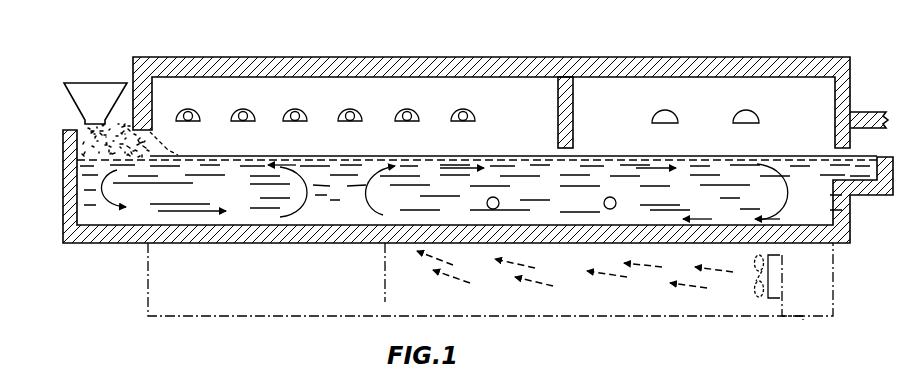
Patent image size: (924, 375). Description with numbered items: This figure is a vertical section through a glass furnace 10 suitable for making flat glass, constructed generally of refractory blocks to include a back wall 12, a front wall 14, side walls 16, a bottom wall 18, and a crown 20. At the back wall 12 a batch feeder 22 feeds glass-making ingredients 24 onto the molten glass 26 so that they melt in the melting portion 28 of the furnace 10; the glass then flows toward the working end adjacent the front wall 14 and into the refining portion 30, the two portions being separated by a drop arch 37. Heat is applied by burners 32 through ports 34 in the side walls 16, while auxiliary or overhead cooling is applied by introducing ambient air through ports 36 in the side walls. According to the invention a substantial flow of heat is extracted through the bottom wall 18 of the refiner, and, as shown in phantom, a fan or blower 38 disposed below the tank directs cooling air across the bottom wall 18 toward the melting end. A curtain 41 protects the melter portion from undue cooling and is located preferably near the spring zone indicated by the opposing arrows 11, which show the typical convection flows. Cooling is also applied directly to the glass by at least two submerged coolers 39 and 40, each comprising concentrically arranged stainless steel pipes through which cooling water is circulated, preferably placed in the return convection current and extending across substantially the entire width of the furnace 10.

The glass furnace 10 is at (205, 51).
The opposing arrows 11 is at (339, 186).
The back wall 12 is at (63, 168).
The front wall 14 is at (850, 223).
The side walls 16 is at (716, 147).
The bottom wall 18 is at (278, 244).
The crown 20 is at (330, 57).
The batch feeder 22 is at (110, 86).
The glass-making ingredients 24 is at (85, 123).
The molten glass 26 is at (241, 194).
The melting portion 28 is at (446, 50).
The refining portion 30 is at (680, 54).
The burners 32 is at (243, 108).
The ports 34 is at (350, 108).
The ports 36 is at (661, 112).
The drop arch 37 is at (558, 110).
The fan or blower 38 is at (758, 293).
The submerged cooler 39 is at (487, 203).
The submerged cooler 40 is at (604, 203).
The curtain 41 is at (383, 268).